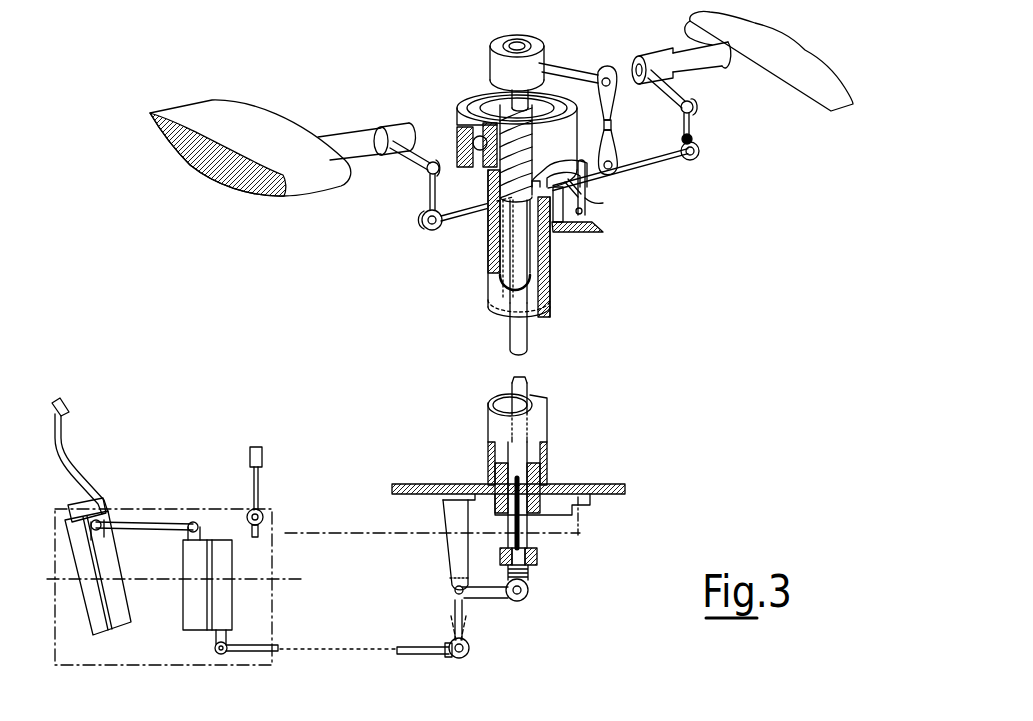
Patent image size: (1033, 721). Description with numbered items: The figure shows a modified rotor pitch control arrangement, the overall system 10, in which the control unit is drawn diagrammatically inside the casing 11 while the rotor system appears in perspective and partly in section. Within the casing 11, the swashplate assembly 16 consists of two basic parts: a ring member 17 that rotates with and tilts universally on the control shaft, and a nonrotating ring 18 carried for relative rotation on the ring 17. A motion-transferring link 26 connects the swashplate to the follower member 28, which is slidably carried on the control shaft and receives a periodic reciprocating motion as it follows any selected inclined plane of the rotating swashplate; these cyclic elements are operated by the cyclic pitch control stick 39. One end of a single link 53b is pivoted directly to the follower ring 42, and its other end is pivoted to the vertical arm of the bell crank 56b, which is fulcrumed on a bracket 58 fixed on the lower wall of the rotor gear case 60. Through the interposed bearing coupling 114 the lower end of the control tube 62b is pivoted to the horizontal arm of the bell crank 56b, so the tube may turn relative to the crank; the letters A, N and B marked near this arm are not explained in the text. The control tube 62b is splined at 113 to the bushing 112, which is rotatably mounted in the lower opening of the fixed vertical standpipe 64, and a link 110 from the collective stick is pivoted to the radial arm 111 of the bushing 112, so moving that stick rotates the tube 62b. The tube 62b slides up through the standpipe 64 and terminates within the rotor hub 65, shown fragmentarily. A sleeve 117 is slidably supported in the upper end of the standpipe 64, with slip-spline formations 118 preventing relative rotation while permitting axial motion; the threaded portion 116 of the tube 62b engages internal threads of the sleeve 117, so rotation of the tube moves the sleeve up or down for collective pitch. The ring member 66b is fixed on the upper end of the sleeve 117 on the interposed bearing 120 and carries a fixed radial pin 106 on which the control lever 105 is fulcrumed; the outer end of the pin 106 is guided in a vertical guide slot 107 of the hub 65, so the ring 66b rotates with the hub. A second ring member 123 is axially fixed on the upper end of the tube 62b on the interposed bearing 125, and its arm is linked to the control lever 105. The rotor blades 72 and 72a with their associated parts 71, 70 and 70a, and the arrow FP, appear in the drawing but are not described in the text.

The propeller blade 72 is at (153, 122).
The blade hub crank 71 is at (398, 156).
The roller follower 70 is at (430, 187).
The control lever 105 is at (652, 162).
The roller follower 70a is at (694, 127).
The propeller blade 72a is at (790, 48).
The second ring member 123 is at (489, 62).
The interposed bearing 125 is at (534, 44).
The ring member 66b is at (501, 132).
The interposed bearing 120 is at (470, 143).
The threaded portion 116 is at (500, 168).
The sleeve part 117 is at (500, 248).
The slip-spline formations 118 is at (533, 257).
The control tube 62b is at (527, 341).
The rotor hub 65 is at (588, 232).
The fixed radial pin 106 is at (598, 183).
The vertical guide slot 107 is at (582, 212).
The feathering position arrow FP is at (613, 235).
The vertical standpipe 64 is at (541, 421).
The bushing 112 is at (530, 474).
The rotor gear case 60 is at (618, 494).
The radial arm 111 is at (587, 517).
The bracket 58 is at (452, 550).
The bell crank 56b is at (490, 599).
The bearing coupling 114 is at (537, 562).
The spline 113 is at (524, 538).
The link 53b is at (403, 652).
The position A is at (456, 656).
The neutral position N is at (459, 658).
The position B is at (462, 656).
The cyclic pitch control stick 39 is at (75, 452).
The control system 10 is at (156, 493).
The ring member 17 is at (121, 623).
The nonrotating ring 18 is at (103, 629).
The motion transferring link 26 is at (158, 521).
The follower ring 42 is at (228, 614).
The swashplate follower member 28 is at (240, 567).
The swashplate assembly 16 is at (77, 619).
The casing 11 is at (112, 672).
The link 110 is at (330, 531).